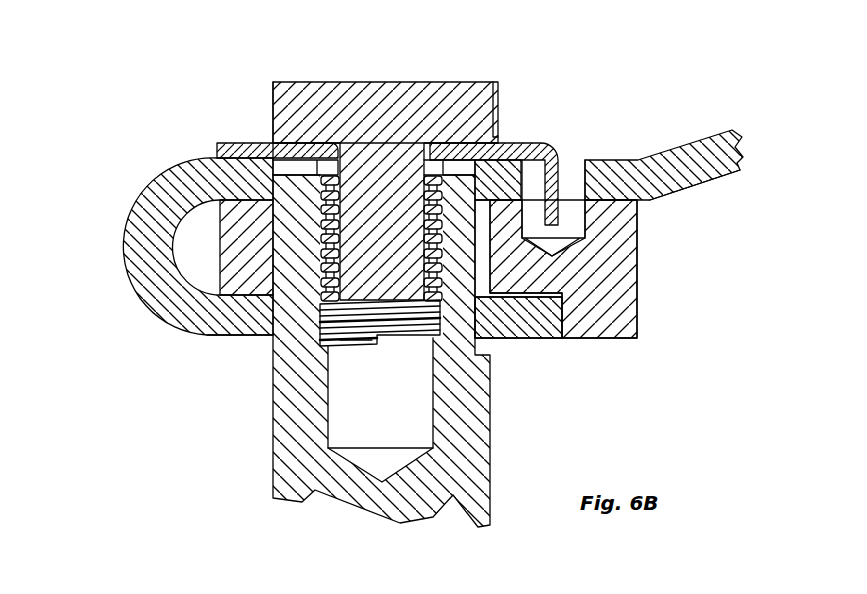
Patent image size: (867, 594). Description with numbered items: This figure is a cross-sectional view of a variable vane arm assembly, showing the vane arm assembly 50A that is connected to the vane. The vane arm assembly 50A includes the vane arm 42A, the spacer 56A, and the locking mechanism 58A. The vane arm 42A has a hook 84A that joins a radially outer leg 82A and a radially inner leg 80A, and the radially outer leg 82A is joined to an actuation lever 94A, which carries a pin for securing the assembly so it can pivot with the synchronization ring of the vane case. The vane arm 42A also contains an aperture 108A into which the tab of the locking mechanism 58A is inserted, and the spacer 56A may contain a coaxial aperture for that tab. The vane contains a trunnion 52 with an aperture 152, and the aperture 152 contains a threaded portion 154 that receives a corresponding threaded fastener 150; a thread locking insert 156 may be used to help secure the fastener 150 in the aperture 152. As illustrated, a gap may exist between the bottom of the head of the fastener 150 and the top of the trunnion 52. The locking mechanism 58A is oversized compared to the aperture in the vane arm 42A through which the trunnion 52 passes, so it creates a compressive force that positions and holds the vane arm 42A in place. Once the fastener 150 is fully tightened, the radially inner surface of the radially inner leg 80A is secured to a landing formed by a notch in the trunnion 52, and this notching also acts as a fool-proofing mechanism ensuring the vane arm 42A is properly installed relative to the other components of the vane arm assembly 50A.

The vane arm assembly 50A is at (145, 335).
The trunnion 52 is at (280, 474).
The spacer 56A is at (613, 282).
The locking mechanism 58A is at (518, 150).
The vane arm 42A is at (660, 173).
The actuation lever 94A is at (697, 170).
The aperture 108A is at (568, 160).
The radially inner leg 80A is at (252, 315).
The radially outer leg 82A is at (187, 187).
The hook 84A is at (142, 212).
The threaded fastener 150 is at (398, 127).
The aperture 152 is at (417, 413).
The threaded portion 154 is at (441, 288).
The thread locking insert 156 is at (372, 340).